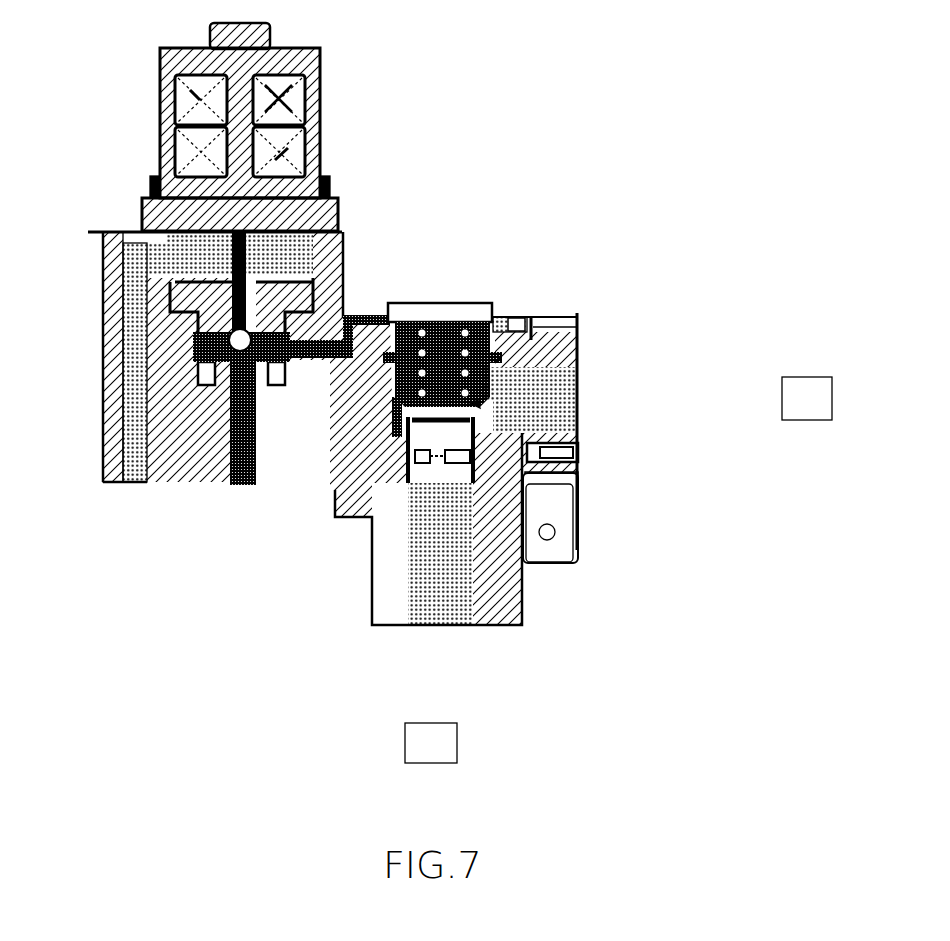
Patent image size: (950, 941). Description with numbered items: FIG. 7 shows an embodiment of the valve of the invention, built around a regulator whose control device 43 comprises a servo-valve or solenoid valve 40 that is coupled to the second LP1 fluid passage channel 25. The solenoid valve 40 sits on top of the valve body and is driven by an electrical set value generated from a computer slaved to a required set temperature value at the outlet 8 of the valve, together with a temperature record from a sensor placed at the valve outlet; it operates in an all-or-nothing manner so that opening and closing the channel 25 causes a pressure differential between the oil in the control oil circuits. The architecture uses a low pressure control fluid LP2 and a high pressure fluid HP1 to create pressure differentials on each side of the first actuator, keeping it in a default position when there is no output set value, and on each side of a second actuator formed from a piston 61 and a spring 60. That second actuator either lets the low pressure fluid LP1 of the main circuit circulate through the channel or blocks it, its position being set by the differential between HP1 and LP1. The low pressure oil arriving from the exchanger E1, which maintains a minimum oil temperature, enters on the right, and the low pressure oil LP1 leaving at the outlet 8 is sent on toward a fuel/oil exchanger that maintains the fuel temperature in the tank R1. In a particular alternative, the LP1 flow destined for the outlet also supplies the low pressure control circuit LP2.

The control device 43 is at (433, 393).
The solenoid valve 40 is at (160, 108).
The spring 60 is at (468, 325).
The piston 61 is at (473, 407).
The second LP1 fluid passage channel 25 is at (597, 404).
The outlet oil flow 8 is at (437, 625).
The low pressure fluid LP1 is at (577, 383).
The low pressure control fluid LP2 is at (135, 355).
The high pressure fluid HP1 is at (240, 483).
The exchanger E1 is at (807, 398).
The tank R1 is at (431, 743).